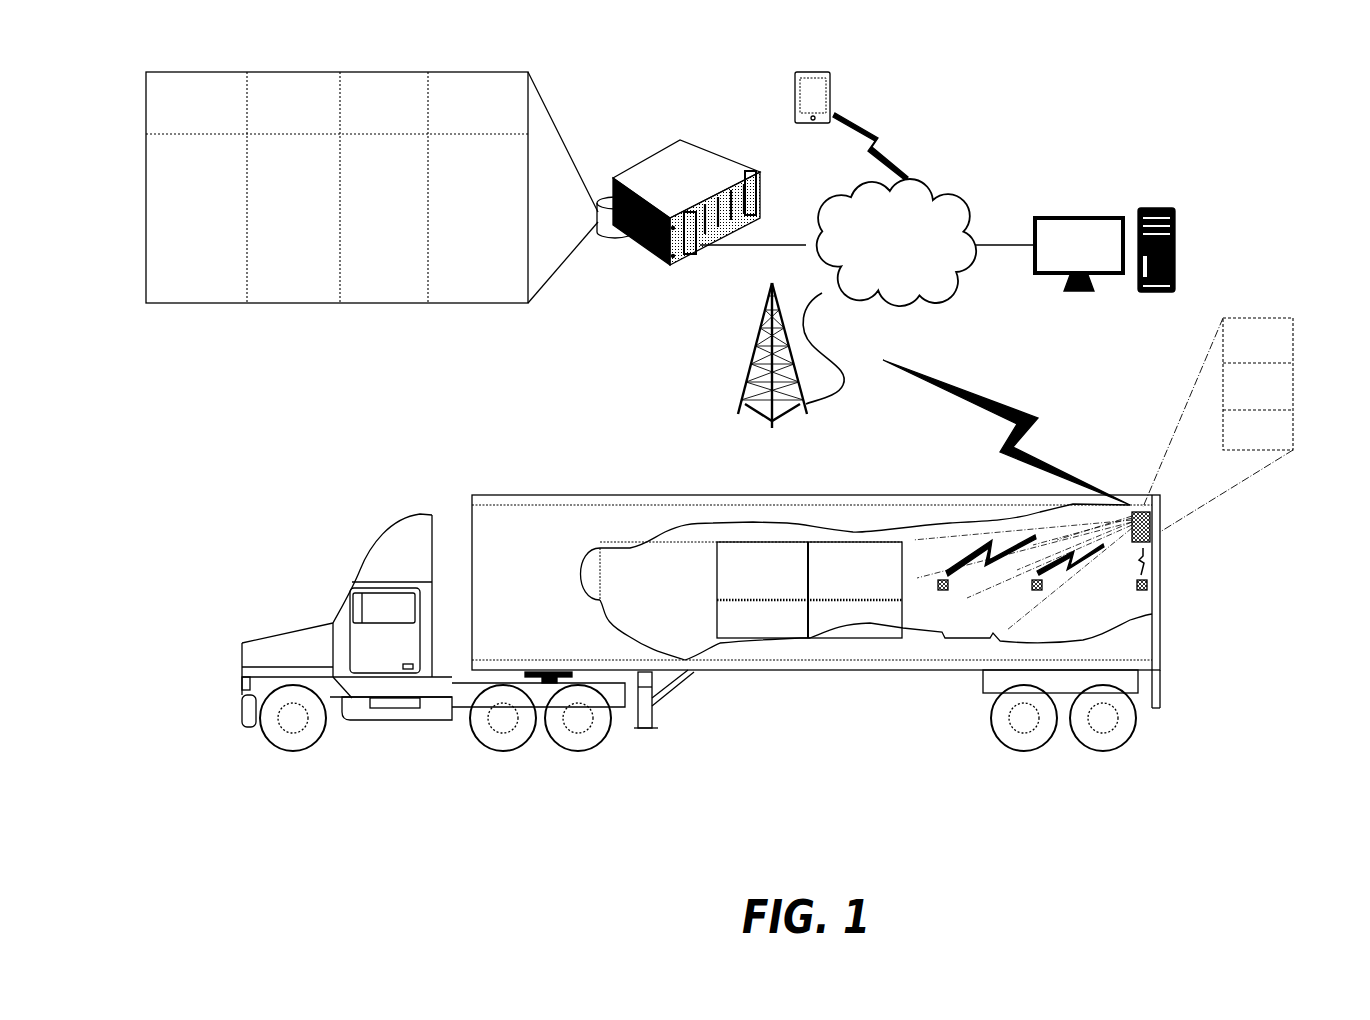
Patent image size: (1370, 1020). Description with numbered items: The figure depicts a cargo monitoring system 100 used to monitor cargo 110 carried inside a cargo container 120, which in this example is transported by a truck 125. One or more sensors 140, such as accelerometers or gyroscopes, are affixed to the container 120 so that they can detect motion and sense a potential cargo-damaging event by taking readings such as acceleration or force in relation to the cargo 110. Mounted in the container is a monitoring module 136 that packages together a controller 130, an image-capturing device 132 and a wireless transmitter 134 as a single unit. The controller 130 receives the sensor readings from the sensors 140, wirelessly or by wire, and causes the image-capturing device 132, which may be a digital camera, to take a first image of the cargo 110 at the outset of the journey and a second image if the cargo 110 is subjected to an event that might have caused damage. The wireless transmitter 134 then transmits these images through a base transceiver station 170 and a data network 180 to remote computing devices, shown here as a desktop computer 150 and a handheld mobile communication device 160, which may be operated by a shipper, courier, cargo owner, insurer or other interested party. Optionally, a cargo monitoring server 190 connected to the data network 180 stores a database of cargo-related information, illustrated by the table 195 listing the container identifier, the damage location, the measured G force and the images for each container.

The cargo monitoring system 100 is at (1027, 97).
The cargo 110 is at (835, 584).
The cargo container 120 is at (627, 495).
The truck 125 is at (295, 630).
The controller 130 is at (1238, 355).
The image-capturing device 132 is at (1238, 401).
The wireless transmitter 134 is at (1238, 447).
The monitoring module 136 is at (1150, 532).
The sensors 140 is at (942, 590).
The desktop computer 150 is at (1058, 254).
The handheld mobile communication device 160 is at (816, 72).
The base transceiver station 170 is at (750, 382).
The data network 180 is at (863, 280).
The cargo monitoring server 190 is at (653, 189).
The database table / damage records 195 is at (228, 72).